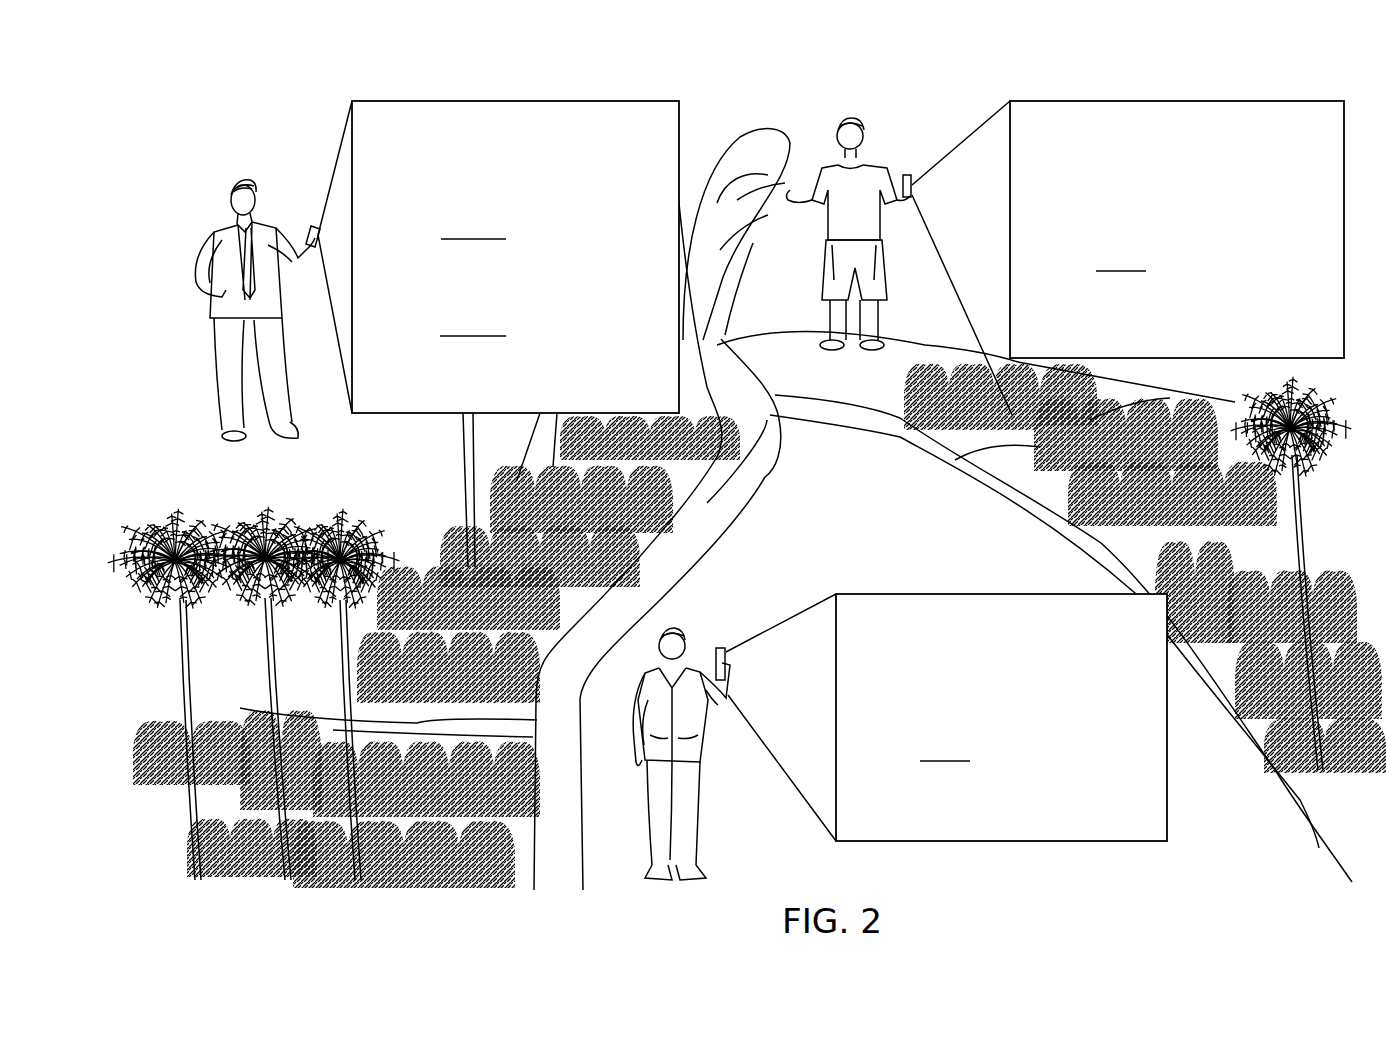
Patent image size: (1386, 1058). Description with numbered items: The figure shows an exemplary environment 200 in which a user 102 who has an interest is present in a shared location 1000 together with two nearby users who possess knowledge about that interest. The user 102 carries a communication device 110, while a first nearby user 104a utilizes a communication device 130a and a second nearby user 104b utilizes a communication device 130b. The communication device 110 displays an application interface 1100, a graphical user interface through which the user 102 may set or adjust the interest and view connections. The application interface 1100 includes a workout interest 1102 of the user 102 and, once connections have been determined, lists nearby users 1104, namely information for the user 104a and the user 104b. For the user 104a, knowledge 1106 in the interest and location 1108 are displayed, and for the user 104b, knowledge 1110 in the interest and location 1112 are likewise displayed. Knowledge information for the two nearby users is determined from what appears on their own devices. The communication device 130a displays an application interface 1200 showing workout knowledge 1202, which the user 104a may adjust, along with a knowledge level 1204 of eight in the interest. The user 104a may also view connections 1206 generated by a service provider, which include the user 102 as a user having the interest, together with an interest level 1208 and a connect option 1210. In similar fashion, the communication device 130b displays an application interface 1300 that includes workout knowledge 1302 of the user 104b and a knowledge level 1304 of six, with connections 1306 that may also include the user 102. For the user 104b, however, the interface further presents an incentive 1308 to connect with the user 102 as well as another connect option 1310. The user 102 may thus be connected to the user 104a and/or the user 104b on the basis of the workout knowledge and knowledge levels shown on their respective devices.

The environment 200 is at (1010, 72).
The shared location 1000 is at (919, 86).
The user 102 is at (243, 180).
The communication device 110 is at (307, 226).
The user 104a is at (873, 227).
The communication device 130a is at (907, 175).
The user 104b is at (693, 785).
The communication device 130b is at (733, 660).
The application interface 1100 is at (662, 141).
The workout interest 1102 is at (662, 174).
The nearby users 1104 is at (589, 206).
The knowledge 1106 is at (615, 271).
The location 1108 is at (588, 304).
The knowledge 1110 is at (613, 369).
The location 1112 is at (586, 401).
The application interface 1200 is at (1318, 141).
The workout knowledge 1202 is at (1315, 174).
The knowledge level 1204 is at (1311, 206).
The connections 1206 is at (1234, 238).
The interest level 1208 is at (1297, 303).
The connect option 1210 is at (1322, 335).
The application interface 1300 is at (1143, 631).
The workout knowledge 1302 is at (1139, 664).
The knowledge level 1304 is at (1135, 696).
The connections 1306 is at (1058, 729).
The incentive 1308 is at (1073, 794).
The connect option 1310 is at (1147, 826).